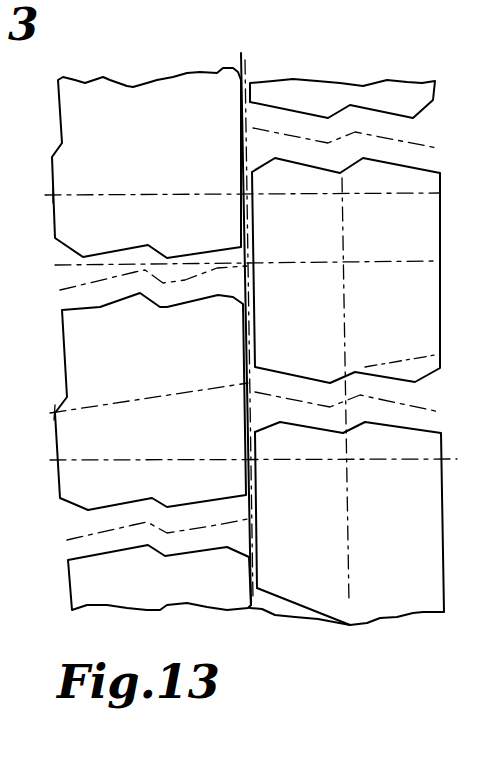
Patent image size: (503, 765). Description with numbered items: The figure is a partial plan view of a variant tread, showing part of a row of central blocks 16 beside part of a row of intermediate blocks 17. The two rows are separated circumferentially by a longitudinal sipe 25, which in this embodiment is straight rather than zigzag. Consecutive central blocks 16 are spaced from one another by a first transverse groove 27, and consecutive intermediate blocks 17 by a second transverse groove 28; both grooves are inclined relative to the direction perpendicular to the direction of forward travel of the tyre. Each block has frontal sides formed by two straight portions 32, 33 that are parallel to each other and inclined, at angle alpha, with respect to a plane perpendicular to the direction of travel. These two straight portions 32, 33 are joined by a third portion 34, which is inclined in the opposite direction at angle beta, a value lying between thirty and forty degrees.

The central block 16 is at (427, 220).
The intermediate block 17 is at (145, 127).
The longitudinal sipe 25 is at (260, 570).
The first transverse groove 27 is at (424, 403).
The second transverse groove 28 is at (78, 547).
The straight portion 32 is at (290, 110).
The straight portion 33 is at (393, 113).
The third portion 34 is at (340, 110).